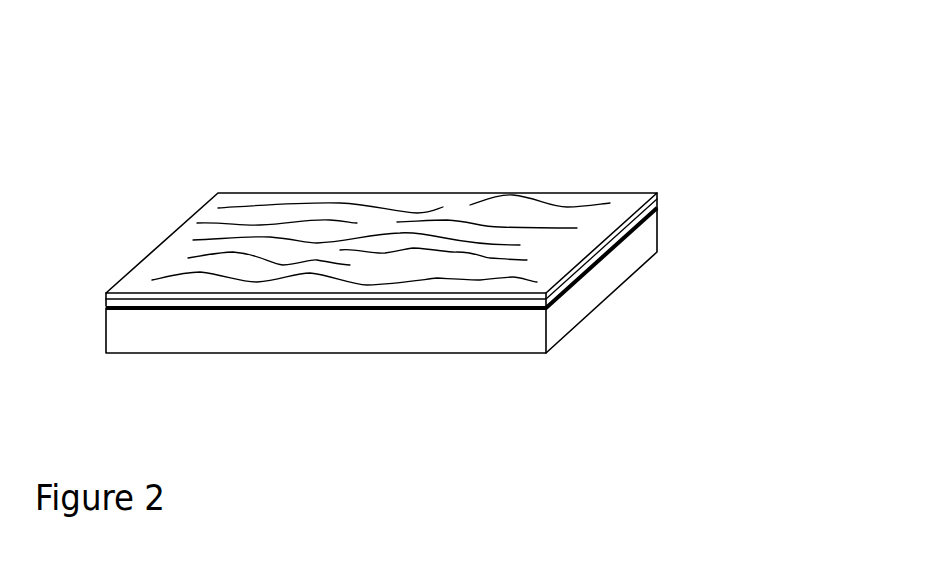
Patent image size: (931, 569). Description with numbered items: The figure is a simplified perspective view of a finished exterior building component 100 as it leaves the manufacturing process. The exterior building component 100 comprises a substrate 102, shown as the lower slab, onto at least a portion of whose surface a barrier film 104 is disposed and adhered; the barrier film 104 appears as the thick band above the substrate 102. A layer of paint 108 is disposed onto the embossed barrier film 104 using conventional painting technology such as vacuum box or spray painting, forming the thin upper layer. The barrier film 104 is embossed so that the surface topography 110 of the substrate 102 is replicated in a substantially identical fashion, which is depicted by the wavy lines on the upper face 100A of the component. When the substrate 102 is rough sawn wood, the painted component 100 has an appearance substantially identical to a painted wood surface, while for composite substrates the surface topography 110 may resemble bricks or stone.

The exterior building component 100 is at (424, 243).
The textured top surface 100A is at (258, 200).
The substrate 102 is at (245, 347).
The barrier film 104 is at (472, 309).
The layer of paint 108 is at (593, 254).
The surface topography 110 is at (460, 223).